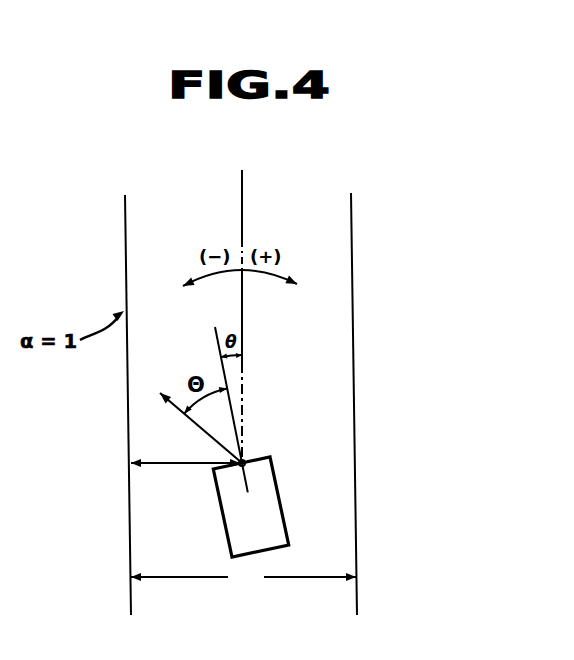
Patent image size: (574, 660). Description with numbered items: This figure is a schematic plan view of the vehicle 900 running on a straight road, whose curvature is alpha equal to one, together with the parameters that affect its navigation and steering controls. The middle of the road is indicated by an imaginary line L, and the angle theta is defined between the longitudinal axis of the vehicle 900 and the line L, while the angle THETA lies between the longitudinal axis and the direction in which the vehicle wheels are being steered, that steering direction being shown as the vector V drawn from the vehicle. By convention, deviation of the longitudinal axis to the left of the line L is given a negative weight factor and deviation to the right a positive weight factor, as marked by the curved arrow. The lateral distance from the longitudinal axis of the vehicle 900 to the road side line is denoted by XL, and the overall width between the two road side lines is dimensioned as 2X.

The vehicle 900 is at (277, 488).
The imaginary line L is at (242, 193).
The velocity vector V is at (195, 418).
The distance from the longitudinal axis of the vehicle to the road side line XL is at (185, 453).
The lane width 2X is at (243, 578).